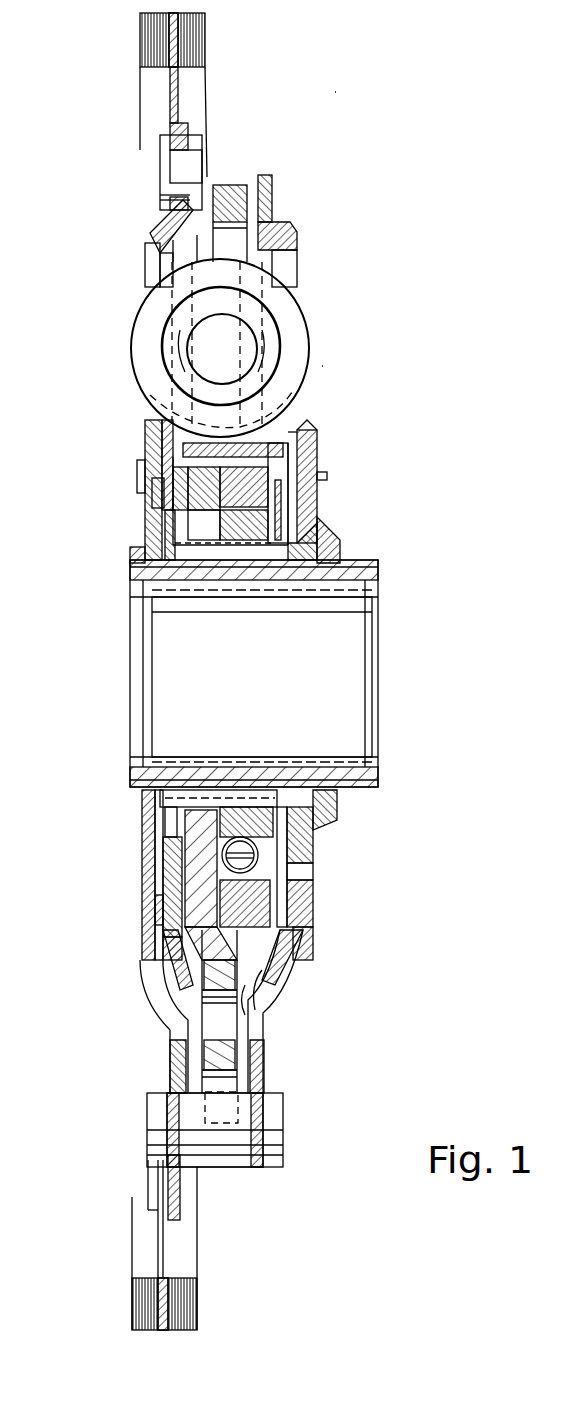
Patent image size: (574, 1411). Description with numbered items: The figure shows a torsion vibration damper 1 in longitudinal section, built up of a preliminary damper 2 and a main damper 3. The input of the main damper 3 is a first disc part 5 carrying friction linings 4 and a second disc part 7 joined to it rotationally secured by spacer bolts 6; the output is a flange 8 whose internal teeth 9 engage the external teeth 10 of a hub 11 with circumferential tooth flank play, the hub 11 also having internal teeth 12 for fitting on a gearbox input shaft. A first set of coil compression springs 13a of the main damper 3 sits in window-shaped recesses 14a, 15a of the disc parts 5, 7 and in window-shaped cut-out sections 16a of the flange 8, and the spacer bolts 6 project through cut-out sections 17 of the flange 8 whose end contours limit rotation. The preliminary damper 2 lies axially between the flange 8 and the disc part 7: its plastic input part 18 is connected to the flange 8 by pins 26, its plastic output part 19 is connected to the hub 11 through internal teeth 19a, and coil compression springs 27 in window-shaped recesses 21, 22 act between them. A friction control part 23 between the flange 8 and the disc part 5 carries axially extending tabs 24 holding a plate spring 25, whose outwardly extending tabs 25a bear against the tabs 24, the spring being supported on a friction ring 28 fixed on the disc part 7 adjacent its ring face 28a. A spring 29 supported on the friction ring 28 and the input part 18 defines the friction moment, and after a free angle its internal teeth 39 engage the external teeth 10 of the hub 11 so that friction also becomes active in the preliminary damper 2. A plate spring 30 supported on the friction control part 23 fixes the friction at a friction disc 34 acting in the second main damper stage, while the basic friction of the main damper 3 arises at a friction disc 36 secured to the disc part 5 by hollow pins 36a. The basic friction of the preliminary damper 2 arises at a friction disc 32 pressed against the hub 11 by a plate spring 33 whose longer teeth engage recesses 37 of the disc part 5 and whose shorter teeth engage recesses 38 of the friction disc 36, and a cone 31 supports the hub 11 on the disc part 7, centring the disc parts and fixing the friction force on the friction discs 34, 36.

The torsion vibration damper 1 is at (340, 90).
The preliminary damper 2 is at (312, 925).
The main damper 3 is at (330, 362).
The friction linings 4 is at (186, 22).
The first disc part 5 is at (150, 240).
The spacer bolts 6 is at (218, 1143).
The second disc part 7 is at (275, 195).
The flange 8 is at (230, 980).
The internal teeth 9 is at (150, 553).
The external teeth 10 is at (235, 806).
The hub 11 is at (205, 583).
The internal teeth 12 is at (314, 583).
The first set of coil compression springs 13a is at (285, 318).
The window-shaped recess 14a is at (152, 415).
The window-shaped recess 15a is at (305, 428).
The window-shaped cut-out section 16a is at (268, 240).
The cut-out sections 17 is at (230, 1075).
The input part 18 is at (285, 975).
The output part 19 is at (280, 812).
The internal teeth 19a is at (245, 583).
The window-shaped recesses 21 is at (150, 962).
The window-shaped recesses 22 is at (220, 812).
The friction control part 23 is at (155, 507).
The tabs 24 is at (160, 440).
The plate spring 25 is at (302, 500).
The tabs 25a is at (300, 450).
The pins 26 is at (150, 478).
The coil compression springs 27 is at (310, 910).
The friction ring 28 is at (310, 840).
The ring face 28a is at (305, 880).
The spring 29 is at (290, 950).
The plate spring 30 is at (313, 860).
The cone 31 is at (320, 808).
The friction disc 32 is at (142, 790).
The plate spring 33 is at (143, 812).
The friction disc 34 is at (150, 905).
The friction disc 36 is at (150, 925).
The hollow pins 36a is at (155, 487).
The recesses 37 is at (148, 850).
The recesses 38 is at (150, 880).
The internal teeth 39 is at (318, 547).